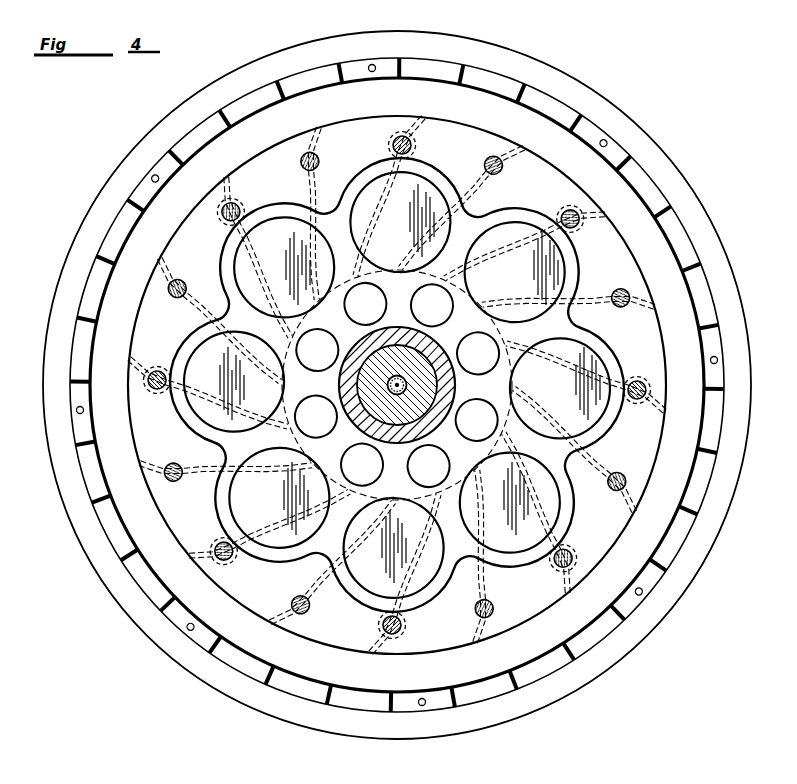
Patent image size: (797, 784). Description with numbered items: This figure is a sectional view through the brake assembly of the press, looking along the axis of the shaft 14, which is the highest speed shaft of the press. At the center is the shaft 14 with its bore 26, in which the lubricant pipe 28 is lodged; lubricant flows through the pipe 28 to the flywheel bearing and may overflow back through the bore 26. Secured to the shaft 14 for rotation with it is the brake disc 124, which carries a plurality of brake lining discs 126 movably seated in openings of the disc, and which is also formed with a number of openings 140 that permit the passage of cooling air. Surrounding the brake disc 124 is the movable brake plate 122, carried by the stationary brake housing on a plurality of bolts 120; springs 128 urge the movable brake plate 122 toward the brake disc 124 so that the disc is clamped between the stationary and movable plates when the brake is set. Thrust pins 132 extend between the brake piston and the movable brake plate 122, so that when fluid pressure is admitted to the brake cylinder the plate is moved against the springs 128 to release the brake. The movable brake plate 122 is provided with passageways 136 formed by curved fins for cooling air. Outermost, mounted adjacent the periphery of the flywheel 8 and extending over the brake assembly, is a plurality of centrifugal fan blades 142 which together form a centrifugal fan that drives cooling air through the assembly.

The flywheel 8 is at (574, 77).
The shaft 14 is at (456, 387).
The bore 26 is at (410, 405).
The pipe 28 is at (403, 405).
The bolts 120 is at (410, 147).
The movable brake plate 122 is at (636, 554).
The brake disc 124 is at (578, 274).
The brake lining discs 126 is at (380, 187).
The springs 128 is at (401, 133).
The thrust pins 132 is at (494, 172).
The passageways 136 is at (268, 166).
The openings 140 is at (362, 305).
The centrifugal fan blades 142 is at (95, 322).